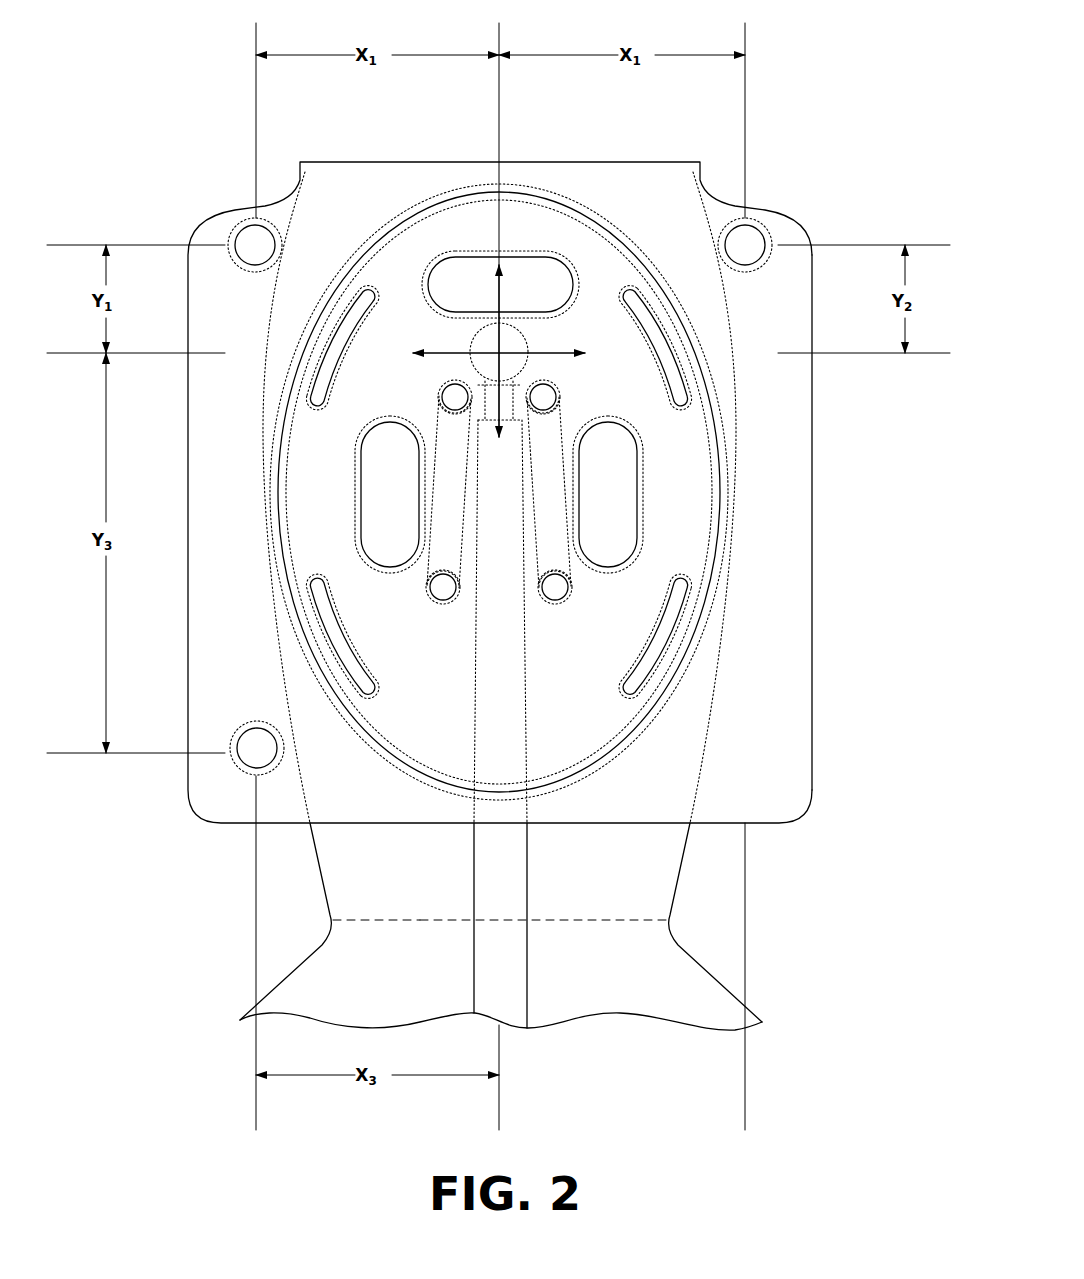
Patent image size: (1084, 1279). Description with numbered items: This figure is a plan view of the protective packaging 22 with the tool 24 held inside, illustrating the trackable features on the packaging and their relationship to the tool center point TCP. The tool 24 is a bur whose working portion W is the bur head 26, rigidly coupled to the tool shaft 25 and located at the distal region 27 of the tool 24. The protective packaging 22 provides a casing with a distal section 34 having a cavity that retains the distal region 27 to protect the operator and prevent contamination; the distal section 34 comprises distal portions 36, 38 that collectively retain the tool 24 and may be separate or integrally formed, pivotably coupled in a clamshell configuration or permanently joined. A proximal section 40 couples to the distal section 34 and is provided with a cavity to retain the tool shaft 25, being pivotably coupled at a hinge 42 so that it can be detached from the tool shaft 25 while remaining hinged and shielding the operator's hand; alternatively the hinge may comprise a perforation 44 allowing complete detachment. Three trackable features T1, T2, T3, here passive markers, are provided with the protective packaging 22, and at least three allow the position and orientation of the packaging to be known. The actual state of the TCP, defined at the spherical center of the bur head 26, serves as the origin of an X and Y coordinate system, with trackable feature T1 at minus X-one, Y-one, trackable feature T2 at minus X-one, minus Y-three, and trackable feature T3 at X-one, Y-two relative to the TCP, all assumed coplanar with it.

The protective packaging 22 is at (782, 114).
The tool 24 is at (533, 850).
The tool shaft 25 is at (528, 993).
The bur head 26 is at (492, 330).
The distal region 27 is at (510, 728).
The distal section 34 is at (814, 455).
The distal portion 36 is at (732, 603).
The distal portion 38 is at (785, 773).
The proximal section 40 is at (745, 993).
The hinge 42 is at (357, 920).
The perforation 44 is at (412, 920).
The trackable feature T1 is at (240, 220).
The trackable feature T2 is at (240, 762).
The trackable feature T3 is at (766, 232).
The working portion W is at (468, 336).
The tool center point TCP is at (403, 388).